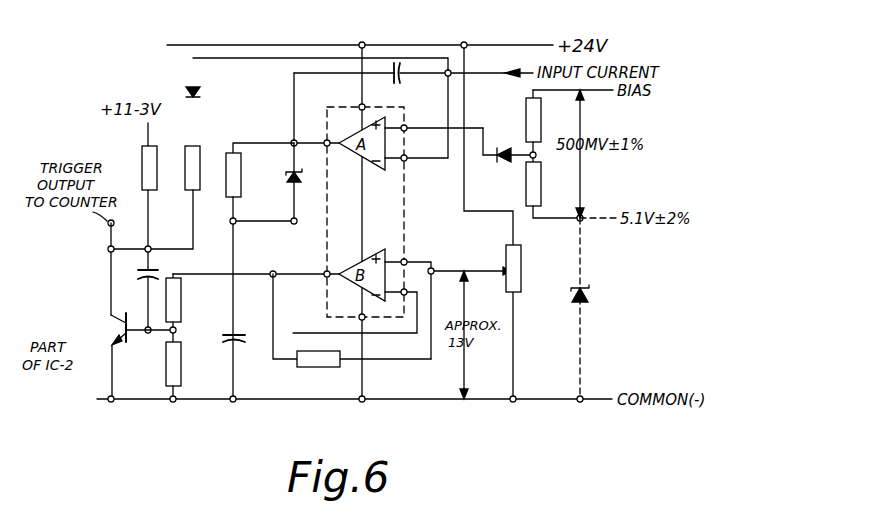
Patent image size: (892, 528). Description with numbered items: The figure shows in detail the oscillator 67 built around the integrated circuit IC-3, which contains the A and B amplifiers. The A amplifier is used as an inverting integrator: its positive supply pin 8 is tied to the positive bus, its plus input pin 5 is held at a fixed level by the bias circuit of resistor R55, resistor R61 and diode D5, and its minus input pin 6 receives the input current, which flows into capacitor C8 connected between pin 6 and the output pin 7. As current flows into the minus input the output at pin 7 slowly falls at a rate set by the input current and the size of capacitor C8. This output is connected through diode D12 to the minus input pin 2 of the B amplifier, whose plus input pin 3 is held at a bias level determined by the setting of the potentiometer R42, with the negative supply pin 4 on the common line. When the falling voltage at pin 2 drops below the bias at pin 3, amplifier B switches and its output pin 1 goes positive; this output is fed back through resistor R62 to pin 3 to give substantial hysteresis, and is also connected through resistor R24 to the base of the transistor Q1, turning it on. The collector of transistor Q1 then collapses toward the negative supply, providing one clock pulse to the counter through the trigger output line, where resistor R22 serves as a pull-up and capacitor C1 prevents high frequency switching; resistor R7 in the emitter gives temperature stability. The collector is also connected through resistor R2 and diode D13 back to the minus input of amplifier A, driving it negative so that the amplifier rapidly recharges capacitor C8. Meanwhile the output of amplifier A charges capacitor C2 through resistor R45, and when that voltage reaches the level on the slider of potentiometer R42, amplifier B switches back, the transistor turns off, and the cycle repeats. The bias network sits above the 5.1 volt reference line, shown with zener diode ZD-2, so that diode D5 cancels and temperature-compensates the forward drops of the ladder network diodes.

The oscillator 67 is at (589, 333).
The integrated circuit IC-3 is at (404, 213).
The diode D13 is at (189, 90).
The resistor R2 is at (200, 151).
The pull-up resistor R22 is at (142, 153).
The resistor R45 is at (240, 190).
The diode D12 is at (289, 177).
The capacitor C8 is at (401, 81).
The resistor R55 is at (526, 106).
The diode D5 is at (498, 163).
The resistor R61 is at (541, 191).
The potentiometer R42 is at (517, 267).
The zener diode ZD-2 is at (589, 296).
The transistor Q1 is at (125, 345).
The capacitor C1 is at (148, 279).
The resistor R24 is at (181, 306).
The resistor R7 is at (183, 365).
The capacitor C2 is at (236, 333).
The resistor R62 is at (318, 368).
The output pin of amplifier B 1 is at (300, 267).
The minus input pin of amplifier B 2 is at (410, 285).
The plus input pin of amplifier B 3 is at (417, 258).
The negative supply pin 4 is at (367, 324).
The plus input pin of amplifier A 5 is at (411, 120).
The minus input pin of amplifier A 6 is at (411, 151).
The output pin of amplifier A 7 is at (310, 135).
The positive supply pin 8 is at (368, 100).